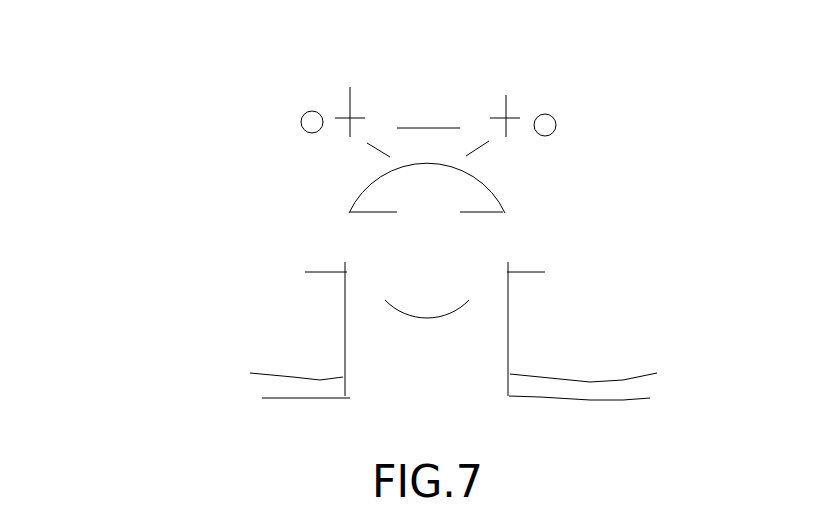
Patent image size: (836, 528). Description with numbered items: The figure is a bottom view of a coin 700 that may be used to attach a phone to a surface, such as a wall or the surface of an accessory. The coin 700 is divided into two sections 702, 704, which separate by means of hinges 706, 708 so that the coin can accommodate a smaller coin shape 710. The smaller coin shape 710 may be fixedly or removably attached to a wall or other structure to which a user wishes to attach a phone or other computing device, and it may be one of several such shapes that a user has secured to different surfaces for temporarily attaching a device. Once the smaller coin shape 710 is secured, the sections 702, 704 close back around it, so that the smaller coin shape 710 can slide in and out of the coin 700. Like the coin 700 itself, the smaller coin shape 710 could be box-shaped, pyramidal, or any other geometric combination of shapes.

The coin 700 is at (144, 73).
The section 702 is at (309, 312).
The section 704 is at (651, 310).
The hinge 706 is at (353, 165).
The hinge 708 is at (498, 168).
The smaller coin shape 710 is at (478, 289).